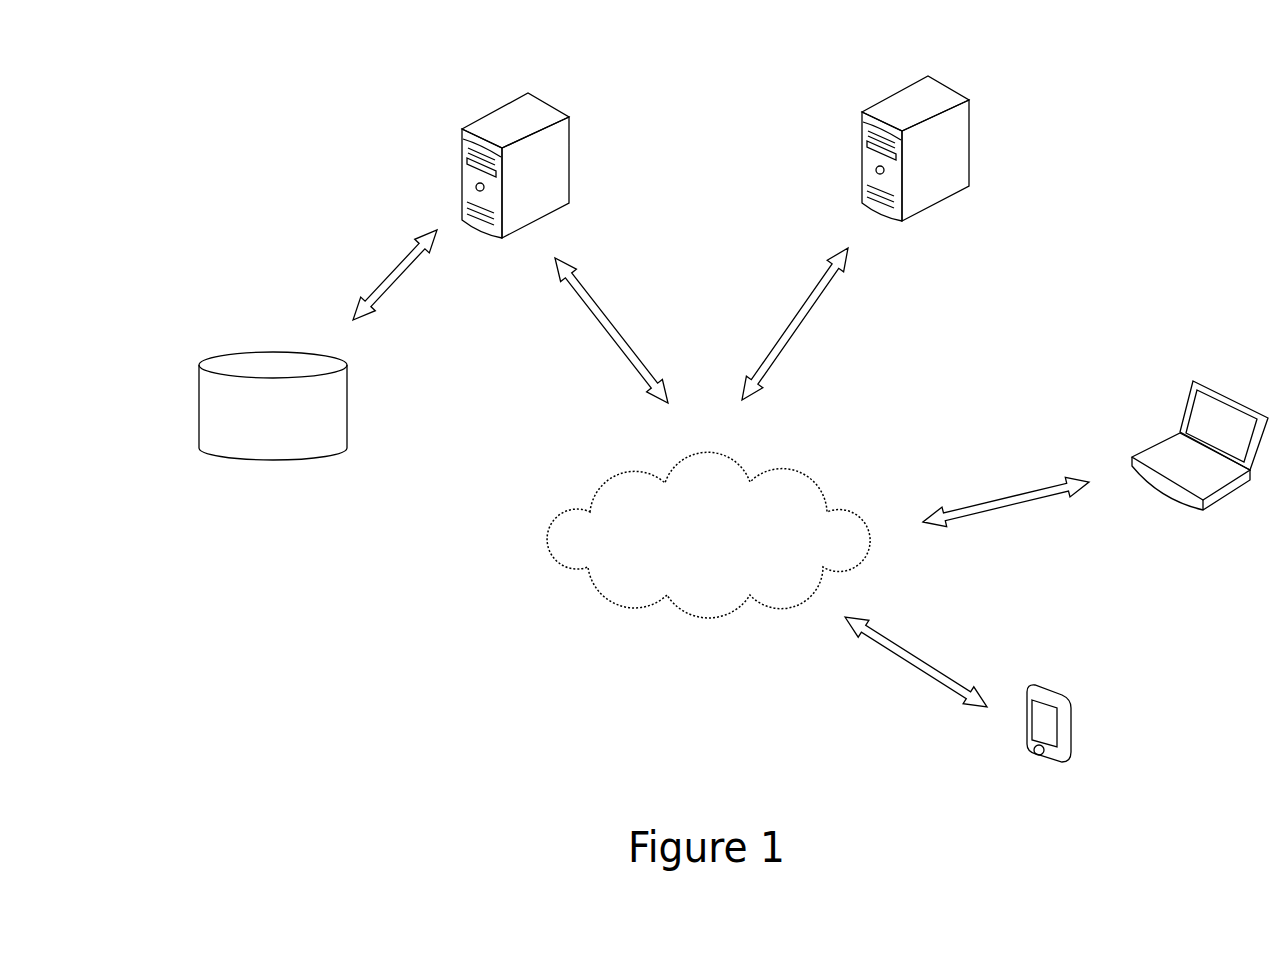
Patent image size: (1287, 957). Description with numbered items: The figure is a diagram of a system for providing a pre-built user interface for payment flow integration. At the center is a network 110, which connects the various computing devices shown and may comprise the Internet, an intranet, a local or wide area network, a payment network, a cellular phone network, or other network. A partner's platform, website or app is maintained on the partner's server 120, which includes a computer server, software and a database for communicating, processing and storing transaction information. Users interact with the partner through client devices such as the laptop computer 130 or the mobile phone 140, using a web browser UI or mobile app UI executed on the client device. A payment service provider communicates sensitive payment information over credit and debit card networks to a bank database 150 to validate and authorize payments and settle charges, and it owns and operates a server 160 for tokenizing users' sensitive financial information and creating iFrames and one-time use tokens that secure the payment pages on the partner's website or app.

The network 110 is at (708, 535).
The partner's server 120 is at (938, 93).
The laptop computer 130 is at (1190, 398).
The mobile phone 140 is at (1038, 755).
The bank database 150 is at (223, 413).
The server 160 is at (553, 147).